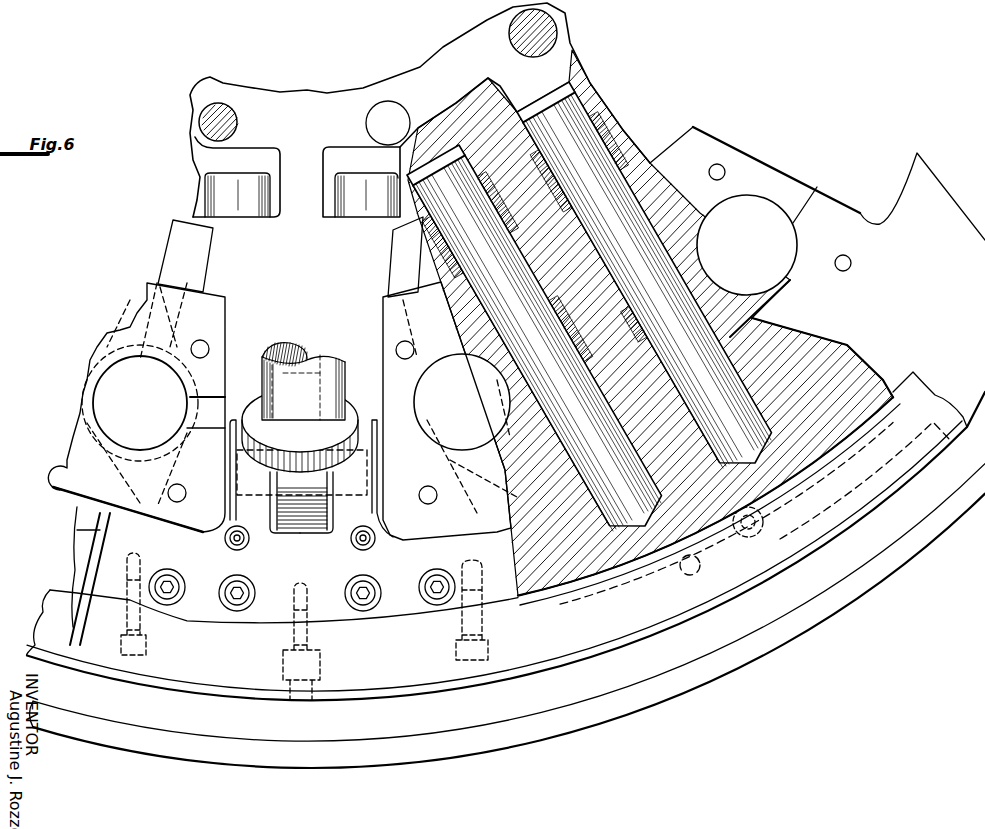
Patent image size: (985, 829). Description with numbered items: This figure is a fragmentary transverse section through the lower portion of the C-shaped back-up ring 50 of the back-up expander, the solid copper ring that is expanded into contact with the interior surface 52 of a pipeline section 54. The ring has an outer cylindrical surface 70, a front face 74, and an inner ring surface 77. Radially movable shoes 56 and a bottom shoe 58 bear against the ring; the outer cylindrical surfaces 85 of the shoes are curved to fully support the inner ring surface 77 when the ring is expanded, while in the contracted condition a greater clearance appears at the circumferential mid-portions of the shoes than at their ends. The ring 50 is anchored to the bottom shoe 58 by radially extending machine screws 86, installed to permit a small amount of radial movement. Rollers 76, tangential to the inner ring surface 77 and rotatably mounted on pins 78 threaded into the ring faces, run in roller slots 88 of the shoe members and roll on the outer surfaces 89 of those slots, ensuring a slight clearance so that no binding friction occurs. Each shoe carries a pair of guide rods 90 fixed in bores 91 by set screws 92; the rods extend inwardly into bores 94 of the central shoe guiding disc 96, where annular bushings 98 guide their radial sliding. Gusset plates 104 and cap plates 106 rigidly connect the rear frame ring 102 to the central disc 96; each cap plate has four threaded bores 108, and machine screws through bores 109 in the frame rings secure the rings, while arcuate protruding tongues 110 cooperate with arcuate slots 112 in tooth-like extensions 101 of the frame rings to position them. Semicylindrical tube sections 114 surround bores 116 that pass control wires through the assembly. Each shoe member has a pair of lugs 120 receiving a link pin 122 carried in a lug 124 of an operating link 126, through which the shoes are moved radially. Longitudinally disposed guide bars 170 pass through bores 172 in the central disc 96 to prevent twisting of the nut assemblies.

The back-up ring 50 is at (942, 410).
The interior surface 52 is at (783, 620).
The pipeline section 54 is at (668, 698).
The radially movable shoe 56 is at (870, 362).
The bottom shoe 58 is at (268, 615).
The outer cylindrical surface 70 is at (458, 690).
The front face 74 is at (620, 599).
The roller 76 is at (790, 552).
The inner ring surface 77 is at (710, 518).
The pin 78 is at (740, 528).
The outer cylindrical surface of shoe 85 is at (800, 482).
The machine screw 86 is at (294, 690).
The roller slot 88 is at (766, 512).
The outer surface of slot 89 is at (690, 572).
The guide rod 90 is at (606, 78).
The bore 91 is at (712, 446).
The set screw 92 is at (250, 543).
The bore 94 is at (598, 258).
The central shoe guiding disc 96 is at (320, 100).
The annular bushing 98 is at (500, 206).
The tooth-like extension 101 is at (718, 140).
The rear frame ring 102 is at (955, 190).
The gusset plate 104 is at (175, 246).
The cap plate 106 is at (223, 306).
The threaded bore 108 is at (192, 346).
The bore 109 is at (710, 172).
The arcuate protruding tongue 110 is at (93, 362).
The arcuate slot 112 is at (812, 192).
The semicylindrical tube section 114 is at (225, 360).
The bore 116 is at (748, 197).
The lug 120 is at (236, 412).
The link pin 122 is at (272, 497).
The lug 124 is at (332, 497).
The operating link 126 is at (298, 328).
The guide bar 170 is at (224, 104).
The bore 172 is at (238, 126).